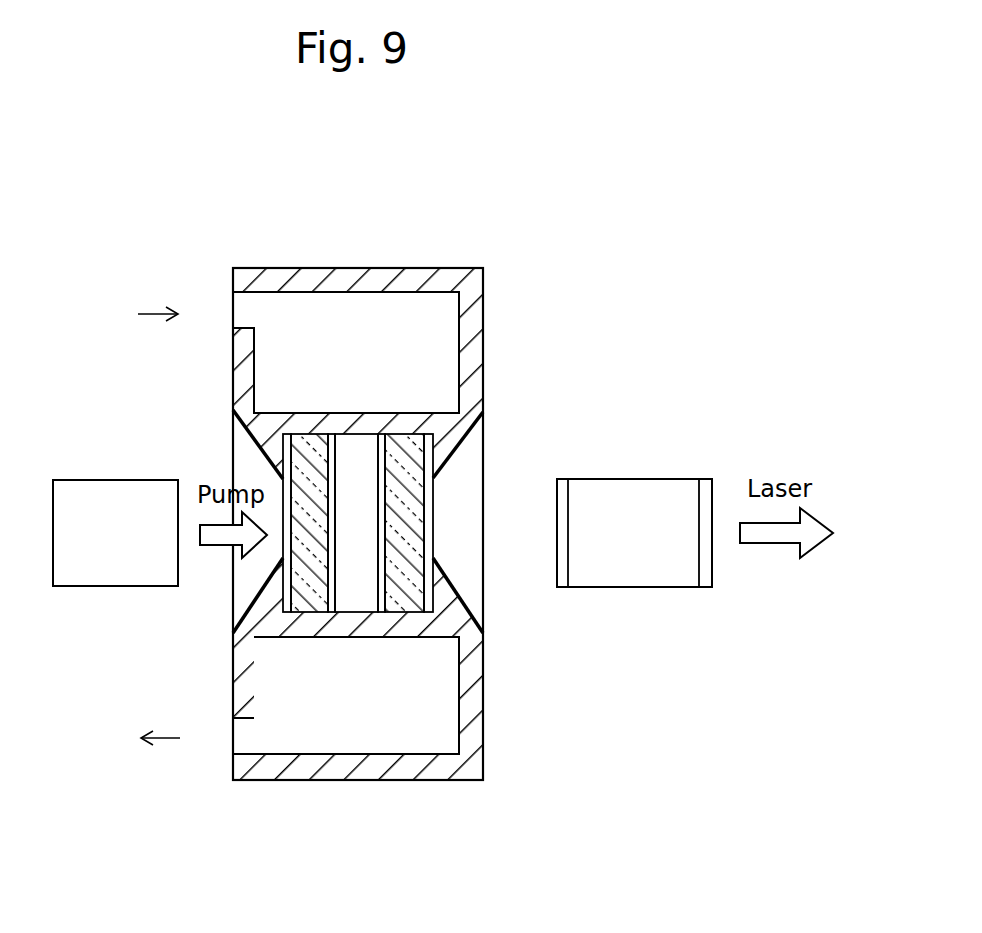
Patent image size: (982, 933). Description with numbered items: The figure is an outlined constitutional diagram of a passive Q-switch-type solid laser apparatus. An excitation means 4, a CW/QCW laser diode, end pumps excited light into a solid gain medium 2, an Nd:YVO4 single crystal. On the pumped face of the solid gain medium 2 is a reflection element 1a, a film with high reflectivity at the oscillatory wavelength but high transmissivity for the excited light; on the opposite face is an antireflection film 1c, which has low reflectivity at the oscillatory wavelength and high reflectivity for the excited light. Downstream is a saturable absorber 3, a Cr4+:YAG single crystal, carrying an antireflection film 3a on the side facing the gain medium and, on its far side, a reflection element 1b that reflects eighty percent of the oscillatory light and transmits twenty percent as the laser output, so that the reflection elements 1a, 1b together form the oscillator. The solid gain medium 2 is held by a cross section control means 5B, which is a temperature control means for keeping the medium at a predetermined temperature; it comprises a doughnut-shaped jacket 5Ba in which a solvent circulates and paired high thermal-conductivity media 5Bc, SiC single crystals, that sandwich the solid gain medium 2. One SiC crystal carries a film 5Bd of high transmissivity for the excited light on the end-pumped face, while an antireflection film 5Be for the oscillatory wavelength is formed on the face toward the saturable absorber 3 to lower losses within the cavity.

The cross section control means 5B is at (518, 297).
The doughnut-shaped jacket 5Ba is at (393, 275).
The high thermal-conductivity media 5Bc is at (290, 553).
The film having a high transmissivity 5Bd is at (287, 476).
The antireflection film 5Be is at (428, 516).
The reflection element 1a is at (331, 594).
The antireflection film 1c is at (383, 584).
The solid gain medium 2 is at (353, 517).
The excitation means 4 is at (78, 570).
The saturable absorber 3 is at (634, 490).
The antireflection film 3a is at (562, 490).
The reflection element 1b is at (705, 563).